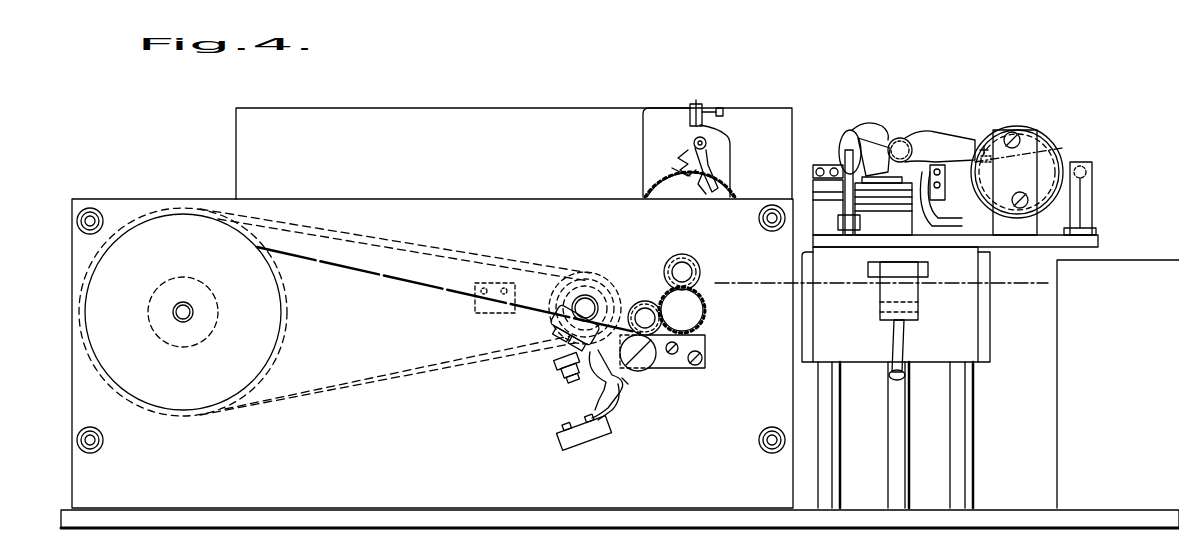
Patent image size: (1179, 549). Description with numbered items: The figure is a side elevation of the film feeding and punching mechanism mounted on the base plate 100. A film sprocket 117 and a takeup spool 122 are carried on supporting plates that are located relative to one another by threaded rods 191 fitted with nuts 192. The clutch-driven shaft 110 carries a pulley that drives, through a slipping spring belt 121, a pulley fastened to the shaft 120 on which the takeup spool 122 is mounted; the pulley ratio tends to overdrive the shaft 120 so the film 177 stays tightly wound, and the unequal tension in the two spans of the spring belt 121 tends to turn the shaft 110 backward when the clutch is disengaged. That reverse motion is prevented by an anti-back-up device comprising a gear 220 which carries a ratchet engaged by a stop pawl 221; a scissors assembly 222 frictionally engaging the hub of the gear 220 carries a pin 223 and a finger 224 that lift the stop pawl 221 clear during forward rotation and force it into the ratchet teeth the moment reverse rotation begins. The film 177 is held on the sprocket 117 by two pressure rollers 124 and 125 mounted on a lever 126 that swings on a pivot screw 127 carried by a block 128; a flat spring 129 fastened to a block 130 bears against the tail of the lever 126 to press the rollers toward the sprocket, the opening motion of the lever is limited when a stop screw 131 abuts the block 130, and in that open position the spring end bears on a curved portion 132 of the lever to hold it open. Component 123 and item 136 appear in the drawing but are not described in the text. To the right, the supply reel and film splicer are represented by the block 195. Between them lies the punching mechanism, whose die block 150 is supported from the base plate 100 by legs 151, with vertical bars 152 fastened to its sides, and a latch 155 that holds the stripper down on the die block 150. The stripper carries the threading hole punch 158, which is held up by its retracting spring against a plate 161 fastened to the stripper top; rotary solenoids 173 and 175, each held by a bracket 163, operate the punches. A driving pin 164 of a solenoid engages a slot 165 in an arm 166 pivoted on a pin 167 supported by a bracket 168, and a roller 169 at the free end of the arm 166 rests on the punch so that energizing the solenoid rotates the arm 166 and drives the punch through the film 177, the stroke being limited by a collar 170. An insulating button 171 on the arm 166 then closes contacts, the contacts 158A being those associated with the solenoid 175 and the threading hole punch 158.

The base plate 100 is at (1037, 508).
The shaft 110 is at (560, 322).
The film sprocket 117 is at (706, 306).
The shaft 120 is at (193, 309).
The spring belt 121 is at (420, 245).
The takeup spool 122 is at (280, 320).
The bracket 123 is at (732, 134).
The pressure roller 124 is at (700, 270).
The pressure roller 125 is at (630, 312).
The lever 126 is at (636, 300).
The pivot screw 127 is at (655, 372).
The block 128 is at (695, 369).
The flat spring 129 is at (616, 412).
The block 130 is at (606, 442).
The stop screw 131 is at (558, 378).
The curved portion 132 is at (608, 392).
The guide plate 136 is at (470, 300).
The die block 150 is at (968, 372).
The legs 151 is at (843, 484).
The vertical bars 152 is at (808, 366).
The latch 155 is at (920, 300).
The threading hole punch 158 is at (884, 140).
The contacts 158A is at (948, 200).
The plate 161 is at (1100, 242).
The bracket 163 is at (1040, 150).
The driving pin 164 is at (1020, 130).
The slot 165 is at (1004, 134).
The arm 166 is at (990, 146).
The pin 167 is at (1092, 172).
The bracket 168 is at (1096, 210).
The roller 169 is at (850, 142).
The collar 170 is at (850, 231).
The button 171 is at (828, 165).
The rotary solenoid 173 is at (858, 130).
The rotary solenoid 175 is at (1054, 140).
The film 177 is at (1003, 285).
The threaded rods 191 is at (758, 217).
The nuts 192 is at (772, 231).
The block 195 is at (1057, 418).
The gear 220 is at (726, 192).
The stop pawl 221 is at (680, 170).
The scissors assembly 222 is at (718, 172).
The pin 223 is at (690, 153).
The finger 224 is at (712, 152).